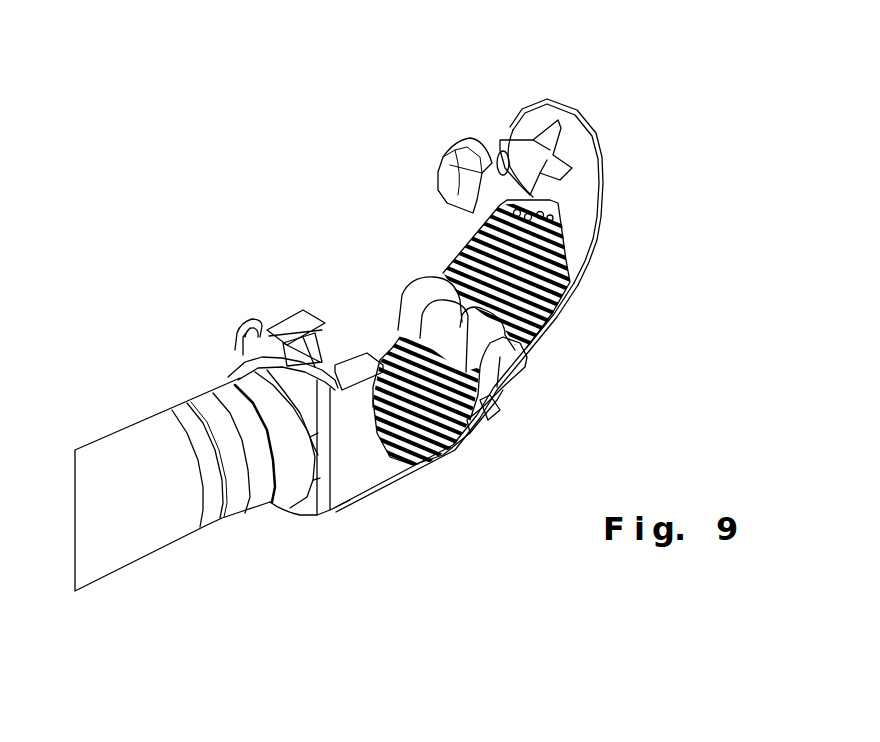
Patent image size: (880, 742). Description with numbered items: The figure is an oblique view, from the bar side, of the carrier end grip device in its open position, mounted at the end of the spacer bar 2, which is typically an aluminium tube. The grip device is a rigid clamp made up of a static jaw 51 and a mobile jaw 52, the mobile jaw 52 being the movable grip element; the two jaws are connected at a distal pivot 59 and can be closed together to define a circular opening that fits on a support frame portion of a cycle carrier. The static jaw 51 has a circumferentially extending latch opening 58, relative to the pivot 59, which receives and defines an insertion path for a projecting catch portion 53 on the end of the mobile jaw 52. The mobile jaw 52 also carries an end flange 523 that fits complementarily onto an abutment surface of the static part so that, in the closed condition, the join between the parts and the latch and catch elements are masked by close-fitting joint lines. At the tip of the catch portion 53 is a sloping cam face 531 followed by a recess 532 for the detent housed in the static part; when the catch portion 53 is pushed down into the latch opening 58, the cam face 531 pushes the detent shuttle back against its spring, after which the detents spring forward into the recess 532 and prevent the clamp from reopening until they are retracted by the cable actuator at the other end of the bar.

The spacer bar 2 is at (123, 425).
The static jaw 51 is at (427, 468).
The mobile jaw 52 is at (502, 275).
The end flange 523 is at (580, 118).
The catch portion 53 is at (449, 132).
The sloping cam face 531 is at (457, 147).
The recess 532 is at (510, 163).
The latch opening 58 is at (349, 322).
The distal pivot 59 is at (513, 371).